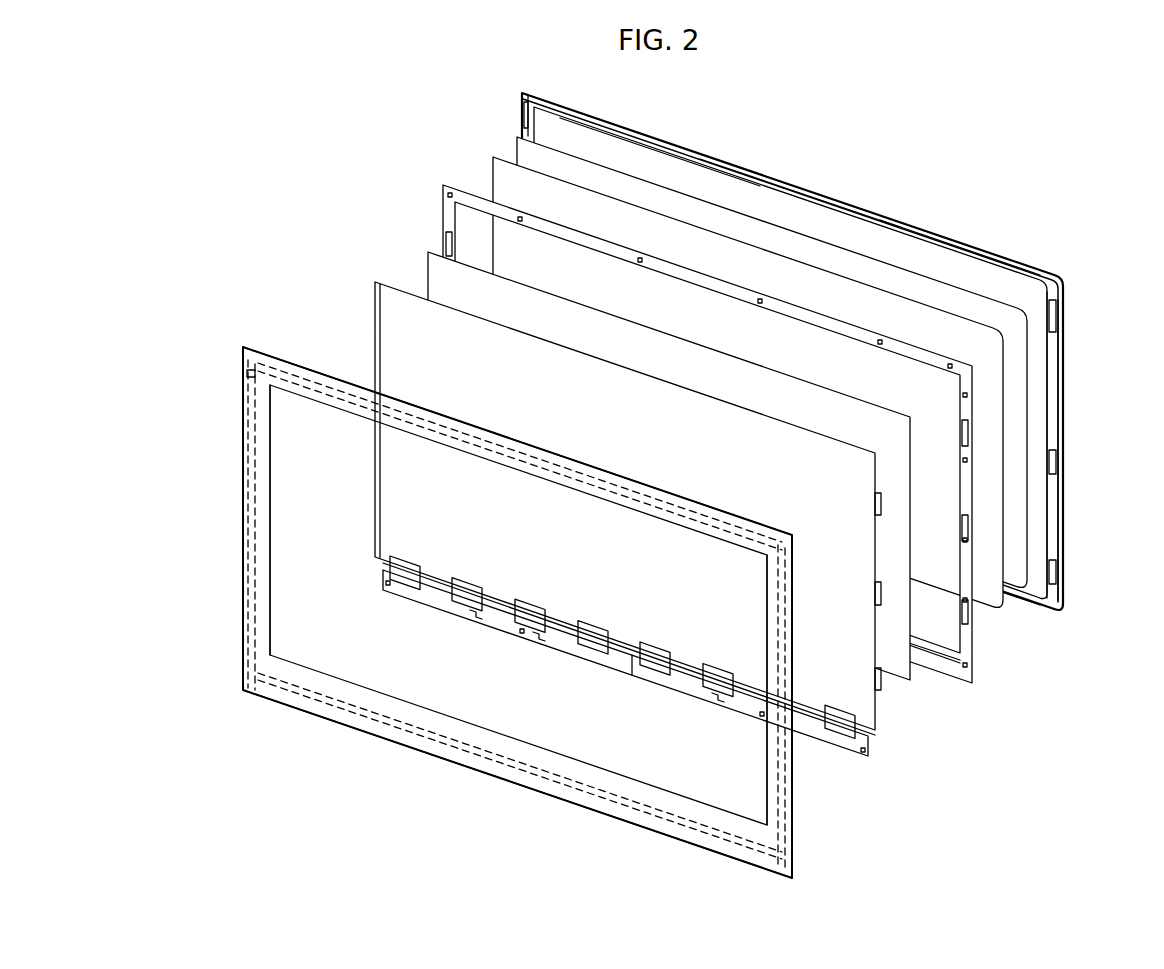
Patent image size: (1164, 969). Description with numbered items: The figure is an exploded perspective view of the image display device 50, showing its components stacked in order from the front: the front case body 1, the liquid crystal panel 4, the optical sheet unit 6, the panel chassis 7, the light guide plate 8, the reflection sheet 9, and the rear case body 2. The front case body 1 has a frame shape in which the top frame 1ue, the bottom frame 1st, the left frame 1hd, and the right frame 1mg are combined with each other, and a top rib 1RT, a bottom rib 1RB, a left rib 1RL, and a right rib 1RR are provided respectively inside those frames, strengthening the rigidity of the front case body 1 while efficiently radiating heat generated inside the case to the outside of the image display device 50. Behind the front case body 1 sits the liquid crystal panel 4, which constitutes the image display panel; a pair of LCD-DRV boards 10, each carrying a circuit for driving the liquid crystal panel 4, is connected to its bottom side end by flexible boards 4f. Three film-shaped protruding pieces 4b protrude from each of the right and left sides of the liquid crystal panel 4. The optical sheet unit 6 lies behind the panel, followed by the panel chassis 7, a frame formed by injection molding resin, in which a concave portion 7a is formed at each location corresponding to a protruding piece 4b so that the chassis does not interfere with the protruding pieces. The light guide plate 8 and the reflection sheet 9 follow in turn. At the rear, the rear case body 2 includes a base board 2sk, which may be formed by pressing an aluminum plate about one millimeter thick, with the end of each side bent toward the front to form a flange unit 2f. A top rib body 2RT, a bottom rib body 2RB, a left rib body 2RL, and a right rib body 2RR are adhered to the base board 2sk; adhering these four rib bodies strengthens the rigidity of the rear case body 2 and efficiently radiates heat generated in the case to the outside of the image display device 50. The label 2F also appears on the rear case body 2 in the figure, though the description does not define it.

The front case body 1 is at (243, 440).
The top frame 1ue is at (422, 428).
The top rib 1RT is at (327, 395).
The left frame 1hd is at (262, 523).
The left rib 1RL is at (245, 607).
The bottom frame 1st is at (387, 713).
The bottom rib 1RB is at (437, 755).
The right frame 1mg is at (782, 776).
The right rib 1RR is at (790, 812).
The rear case body 2 is at (818, 193).
The left rib body 2RL is at (518, 106).
The flange unit 2f is at (600, 114).
The base board 2sk is at (720, 160).
The top rib body 2RT is at (920, 243).
The right rib body 2RR is at (1060, 375).
The front face of rear frame 2F is at (1063, 458).
The bottom rib body 2RB is at (1050, 592).
The liquid crystal panel 4 is at (375, 321).
The flexible board 4f is at (410, 566).
The protruding piece 4b is at (872, 508).
The optical sheet unit 6 is at (442, 280).
The panel chassis 7 is at (444, 209).
The concave portion 7a is at (957, 437).
The light guide plate 8 is at (500, 182).
The reflection sheet 9 is at (512, 150).
The LCD-DRV board 10 is at (497, 629).
The image display device 50 is at (1060, 186).